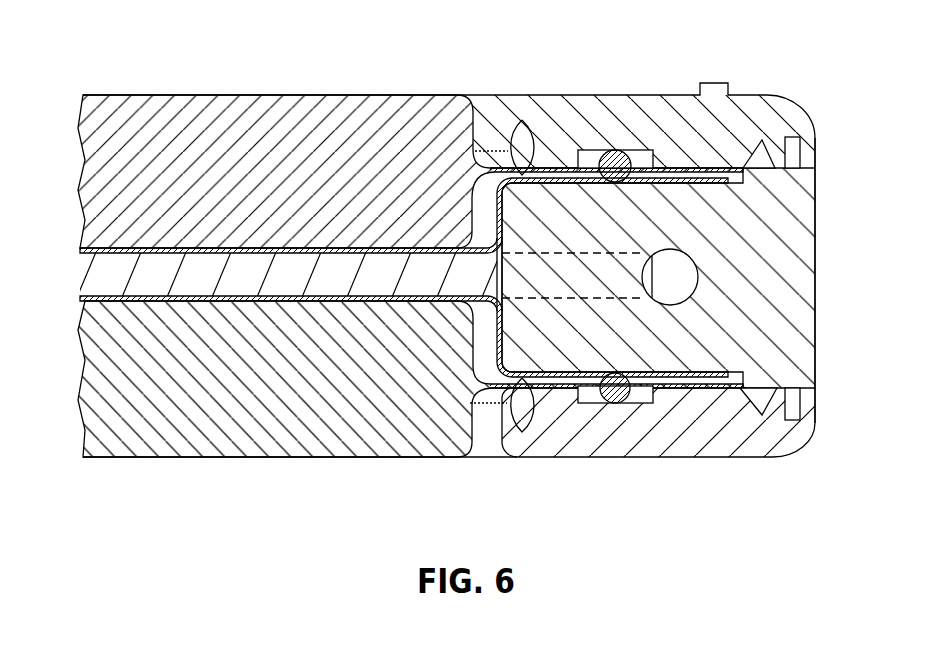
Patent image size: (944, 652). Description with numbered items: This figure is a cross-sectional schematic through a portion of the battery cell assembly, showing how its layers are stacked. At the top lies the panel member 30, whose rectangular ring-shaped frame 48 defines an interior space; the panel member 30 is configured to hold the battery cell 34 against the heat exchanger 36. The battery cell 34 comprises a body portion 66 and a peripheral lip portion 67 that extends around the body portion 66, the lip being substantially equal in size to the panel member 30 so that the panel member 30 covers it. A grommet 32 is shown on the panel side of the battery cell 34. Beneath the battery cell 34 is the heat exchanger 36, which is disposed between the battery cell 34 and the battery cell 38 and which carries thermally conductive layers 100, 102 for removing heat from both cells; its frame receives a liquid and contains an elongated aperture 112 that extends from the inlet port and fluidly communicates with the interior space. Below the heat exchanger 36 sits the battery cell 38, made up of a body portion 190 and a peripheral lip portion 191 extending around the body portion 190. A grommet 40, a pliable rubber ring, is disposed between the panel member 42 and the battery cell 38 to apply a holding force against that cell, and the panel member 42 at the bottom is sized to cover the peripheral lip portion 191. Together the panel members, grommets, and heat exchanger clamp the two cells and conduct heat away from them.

The panel member 30 is at (470, 235).
The grommet 32 is at (612, 150).
The battery cell 34 is at (410, 135).
The heat exchanger 36 is at (815, 278).
The battery cell 38 is at (410, 417).
The grommet 40 is at (605, 402).
The panel member 42 is at (642, 449).
The rectangular ring-shaped frame 48 is at (320, 288).
The body portion 66 is at (227, 145).
The peripheral lip portion 67 is at (510, 125).
The thermally conductive layer 100 is at (264, 248).
The thermally conductive layer 102 is at (267, 303).
The elongated aperture 112 is at (676, 274).
The body portion 190 is at (417, 432).
The peripheral lip portion 191 is at (510, 395).